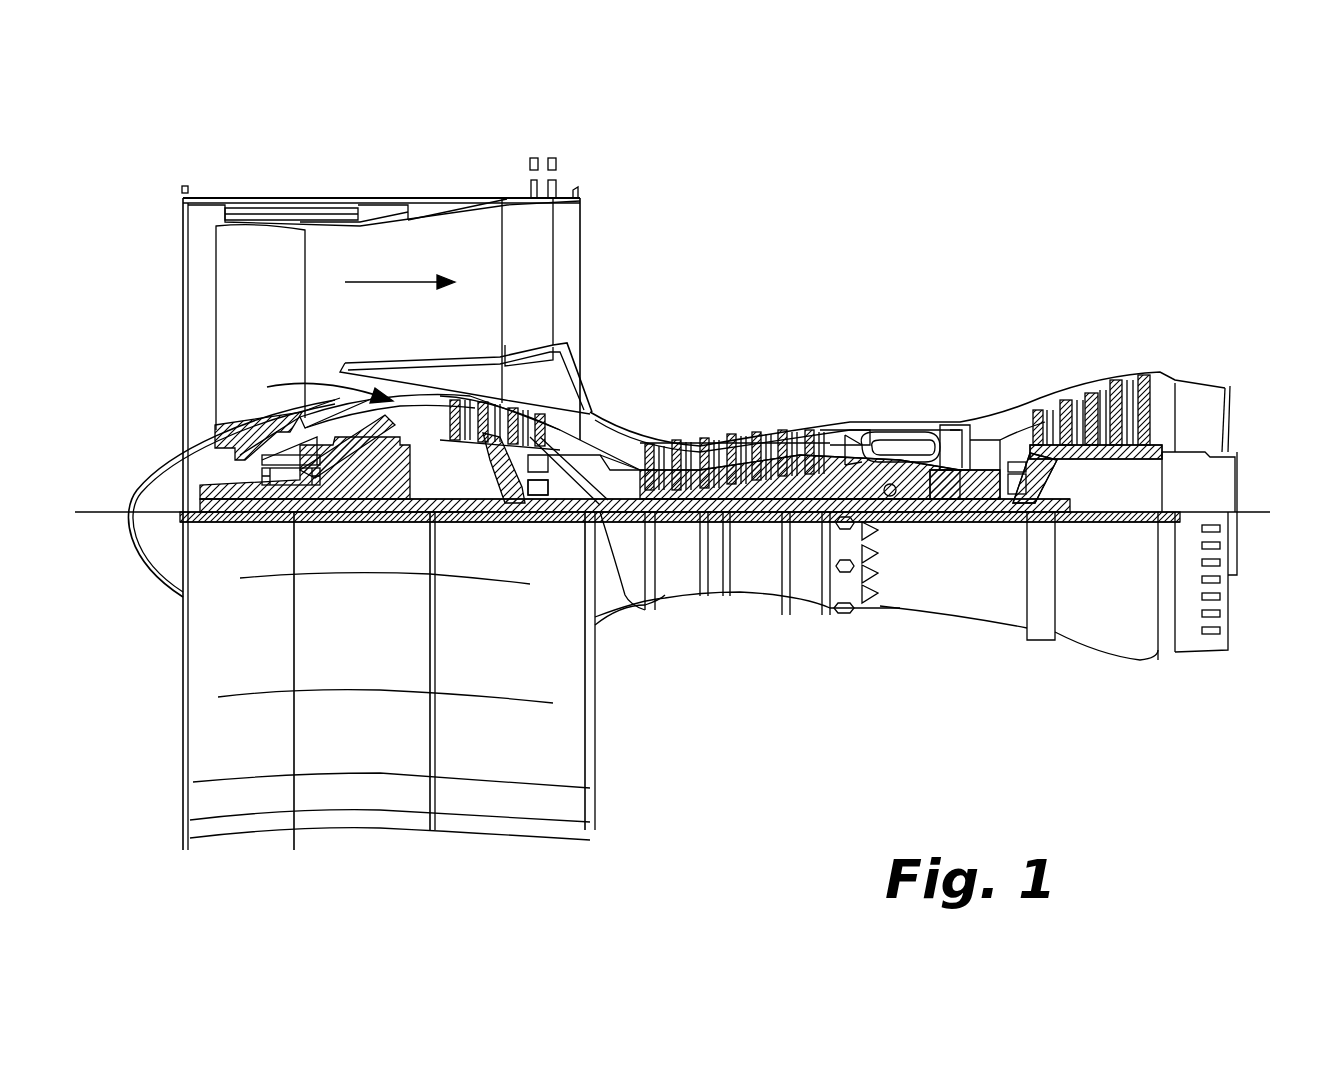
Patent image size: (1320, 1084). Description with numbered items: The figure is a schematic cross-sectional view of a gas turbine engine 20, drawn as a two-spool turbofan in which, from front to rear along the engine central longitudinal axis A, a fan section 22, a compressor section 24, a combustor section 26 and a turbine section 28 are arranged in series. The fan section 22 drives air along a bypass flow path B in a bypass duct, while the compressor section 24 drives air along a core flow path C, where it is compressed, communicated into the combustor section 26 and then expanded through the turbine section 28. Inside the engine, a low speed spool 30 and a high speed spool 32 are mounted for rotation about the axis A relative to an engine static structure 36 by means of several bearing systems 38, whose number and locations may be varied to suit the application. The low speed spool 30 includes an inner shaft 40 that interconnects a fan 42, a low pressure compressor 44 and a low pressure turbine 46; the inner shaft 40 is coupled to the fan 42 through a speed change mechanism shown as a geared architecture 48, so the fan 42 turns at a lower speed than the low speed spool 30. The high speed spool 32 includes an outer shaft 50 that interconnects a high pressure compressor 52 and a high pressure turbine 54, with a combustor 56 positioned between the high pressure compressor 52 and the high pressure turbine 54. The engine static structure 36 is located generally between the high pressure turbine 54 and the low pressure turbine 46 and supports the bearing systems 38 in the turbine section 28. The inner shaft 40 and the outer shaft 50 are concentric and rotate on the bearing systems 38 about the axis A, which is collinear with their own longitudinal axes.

The gas turbine engine 20 is at (912, 232).
The fan section 22 is at (415, 163).
The compressor section 24 is at (880, 328).
The combustor section 26 is at (987, 328).
The turbine section 28 is at (1180, 328).
The low speed spool 30 is at (760, 530).
The high speed spool 32 is at (805, 478).
The engine static structure 36 is at (808, 620).
The bearing systems 38 is at (275, 500).
The inner shaft 40 is at (643, 600).
The fan 42 is at (270, 348).
The low pressure compressor 44 is at (513, 403).
The low pressure turbine 46 is at (1105, 392).
The geared architecture 48 is at (395, 490).
The outer shaft 50 is at (898, 495).
The high pressure compressor 52 is at (735, 490).
The high pressure turbine 54 is at (955, 440).
The combustor 56 is at (890, 455).
The engine central longitudinal axis A is at (1262, 512).
The bypass flow path B is at (390, 282).
The core flow path C is at (316, 388).